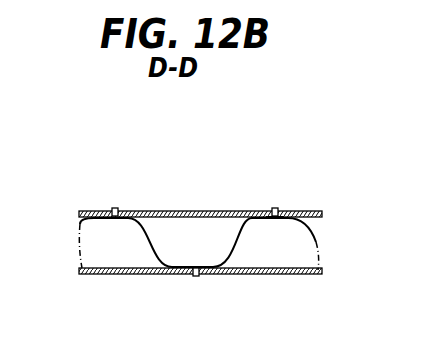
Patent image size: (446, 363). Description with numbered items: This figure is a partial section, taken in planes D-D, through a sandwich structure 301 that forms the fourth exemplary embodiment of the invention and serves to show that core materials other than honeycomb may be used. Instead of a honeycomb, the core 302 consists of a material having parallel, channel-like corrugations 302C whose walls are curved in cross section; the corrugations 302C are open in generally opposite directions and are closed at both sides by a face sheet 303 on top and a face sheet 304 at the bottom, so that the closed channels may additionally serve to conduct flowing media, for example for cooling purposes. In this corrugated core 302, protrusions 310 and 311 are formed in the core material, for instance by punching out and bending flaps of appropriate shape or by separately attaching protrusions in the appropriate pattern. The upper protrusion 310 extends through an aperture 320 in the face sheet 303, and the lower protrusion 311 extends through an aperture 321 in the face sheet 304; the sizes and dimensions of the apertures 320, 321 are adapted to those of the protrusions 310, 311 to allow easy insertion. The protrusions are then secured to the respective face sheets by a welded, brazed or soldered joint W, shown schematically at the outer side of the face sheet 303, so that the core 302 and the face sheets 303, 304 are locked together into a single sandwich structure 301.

The sandwich structure 301 is at (182, 228).
The core 302 is at (164, 286).
The corrugations 302C is at (195, 245).
The face sheet 303 is at (172, 210).
The face sheet 304 is at (302, 275).
The protrusion 310 is at (278, 209).
The aperture 320 is at (274, 208).
The protrusion 311 is at (199, 276).
The aperture 321 is at (194, 276).
The joint W is at (116, 208).